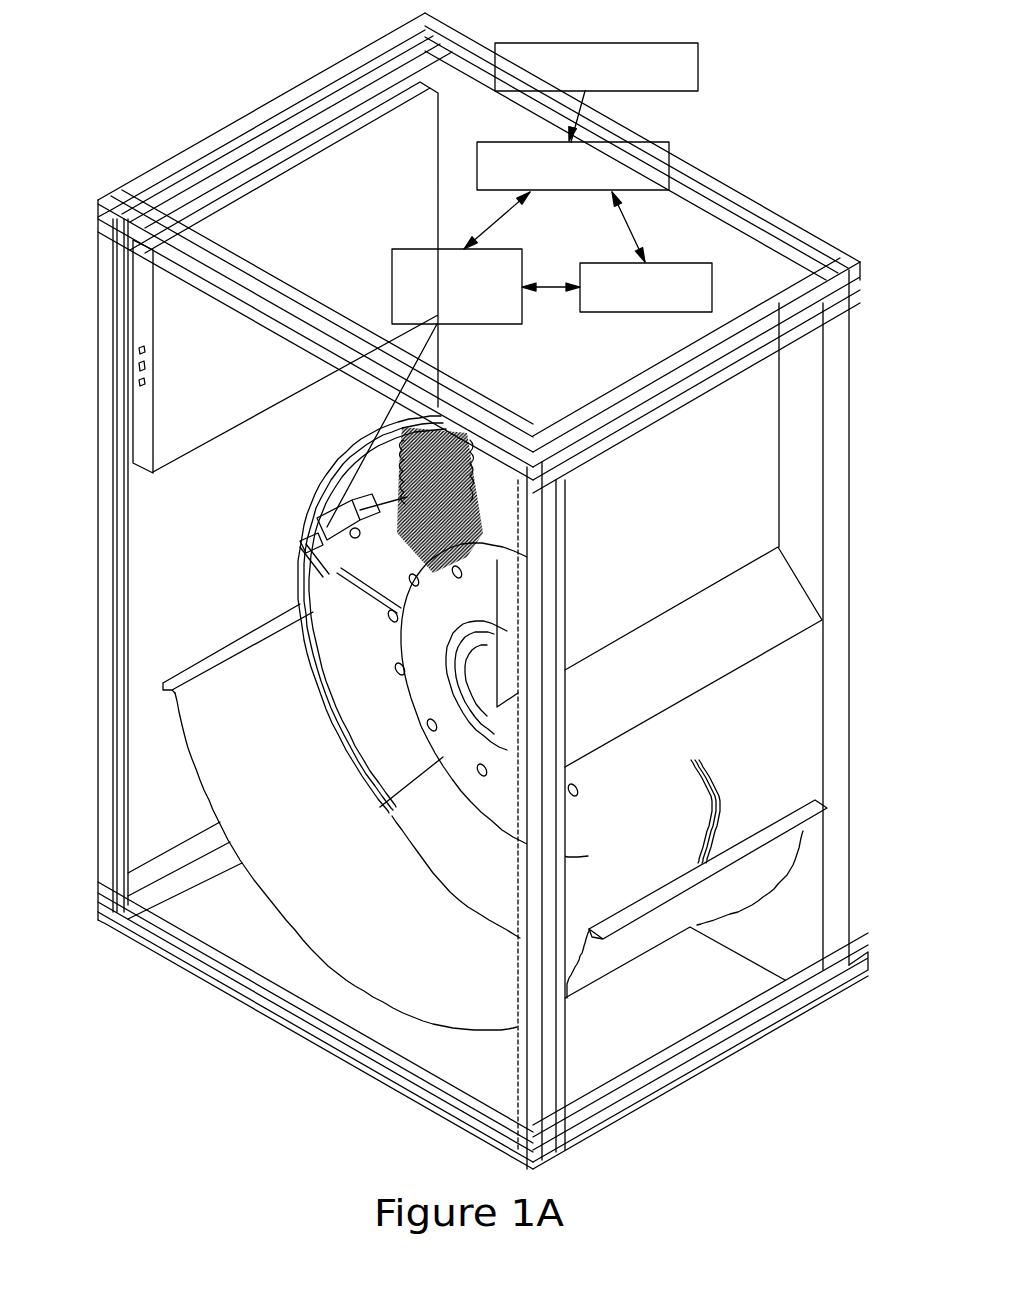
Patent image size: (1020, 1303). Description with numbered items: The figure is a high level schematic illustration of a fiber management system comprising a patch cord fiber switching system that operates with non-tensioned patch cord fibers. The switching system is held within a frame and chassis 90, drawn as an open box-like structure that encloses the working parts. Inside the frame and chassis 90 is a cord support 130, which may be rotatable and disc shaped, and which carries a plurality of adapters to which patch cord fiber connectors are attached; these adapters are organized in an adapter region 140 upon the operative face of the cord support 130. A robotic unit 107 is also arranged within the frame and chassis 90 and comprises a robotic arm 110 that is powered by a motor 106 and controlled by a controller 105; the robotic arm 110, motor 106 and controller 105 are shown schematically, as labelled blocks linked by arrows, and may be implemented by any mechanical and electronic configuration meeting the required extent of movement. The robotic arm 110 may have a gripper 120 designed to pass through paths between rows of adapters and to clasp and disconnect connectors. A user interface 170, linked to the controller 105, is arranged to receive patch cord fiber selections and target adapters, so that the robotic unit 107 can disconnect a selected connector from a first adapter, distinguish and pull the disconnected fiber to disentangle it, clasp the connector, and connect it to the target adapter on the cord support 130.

The frame and chassis 90 is at (158, 167).
The robotic unit 107 is at (303, 210).
The controller 105 is at (205, 395).
The user interface 170 is at (554, 45).
The motor 106 is at (605, 262).
The robotic arm 110 is at (425, 248).
The gripper 120 is at (300, 545).
The adapter region 140 is at (372, 487).
The cord support 130 is at (710, 737).